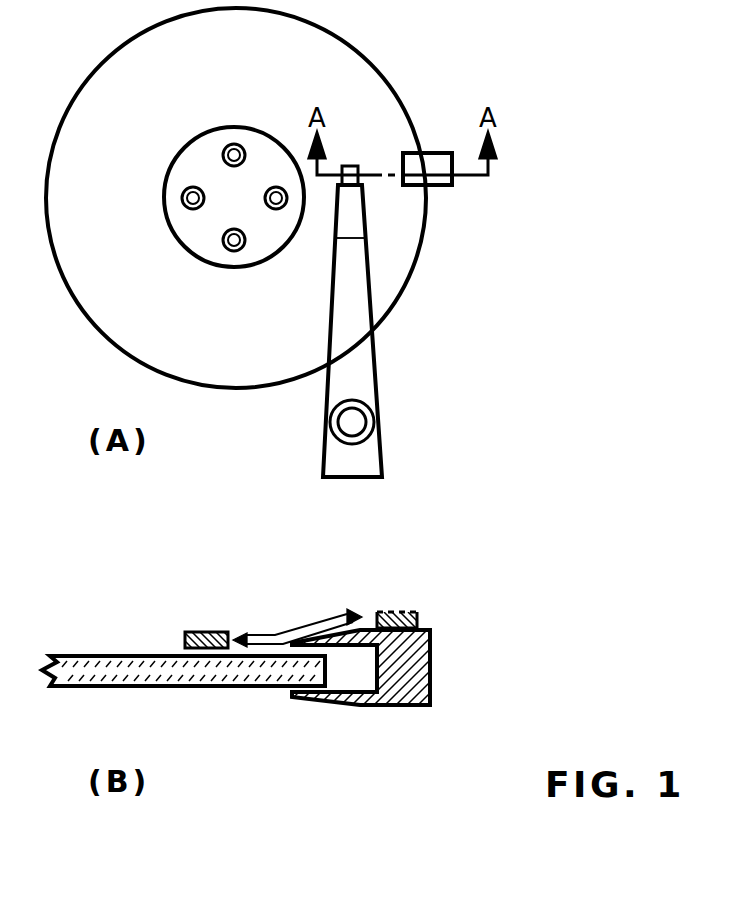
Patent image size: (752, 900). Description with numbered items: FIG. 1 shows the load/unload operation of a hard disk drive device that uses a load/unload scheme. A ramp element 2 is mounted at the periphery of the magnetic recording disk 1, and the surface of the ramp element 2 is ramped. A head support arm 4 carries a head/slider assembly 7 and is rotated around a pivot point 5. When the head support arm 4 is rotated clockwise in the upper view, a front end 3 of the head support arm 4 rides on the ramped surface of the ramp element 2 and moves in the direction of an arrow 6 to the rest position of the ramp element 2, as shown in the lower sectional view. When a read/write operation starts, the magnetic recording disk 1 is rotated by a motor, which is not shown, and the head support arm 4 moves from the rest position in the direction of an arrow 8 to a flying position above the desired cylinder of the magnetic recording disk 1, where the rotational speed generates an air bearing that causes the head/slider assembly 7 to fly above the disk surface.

The magnetic recording disk 1 is at (363, 83).
The ramp element 2 is at (423, 157).
The front end 3 is at (348, 164).
The head support arm 4 is at (382, 447).
The pivot point 5 is at (355, 410).
The arrow 6 is at (302, 618).
The head/slider assembly 7 is at (348, 217).
The arrow 8 is at (275, 632).